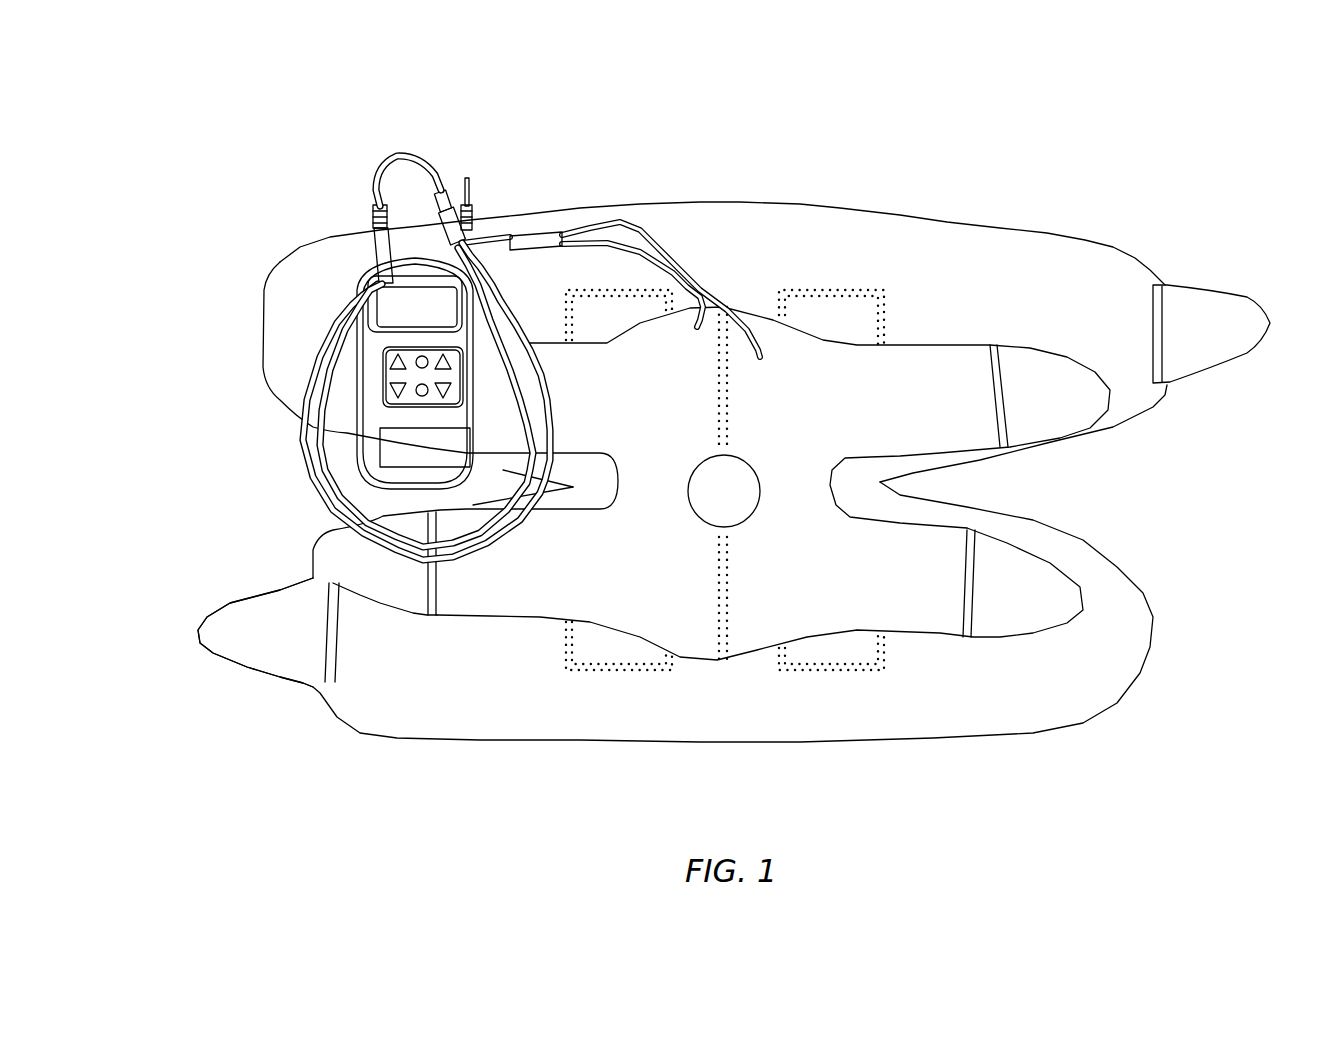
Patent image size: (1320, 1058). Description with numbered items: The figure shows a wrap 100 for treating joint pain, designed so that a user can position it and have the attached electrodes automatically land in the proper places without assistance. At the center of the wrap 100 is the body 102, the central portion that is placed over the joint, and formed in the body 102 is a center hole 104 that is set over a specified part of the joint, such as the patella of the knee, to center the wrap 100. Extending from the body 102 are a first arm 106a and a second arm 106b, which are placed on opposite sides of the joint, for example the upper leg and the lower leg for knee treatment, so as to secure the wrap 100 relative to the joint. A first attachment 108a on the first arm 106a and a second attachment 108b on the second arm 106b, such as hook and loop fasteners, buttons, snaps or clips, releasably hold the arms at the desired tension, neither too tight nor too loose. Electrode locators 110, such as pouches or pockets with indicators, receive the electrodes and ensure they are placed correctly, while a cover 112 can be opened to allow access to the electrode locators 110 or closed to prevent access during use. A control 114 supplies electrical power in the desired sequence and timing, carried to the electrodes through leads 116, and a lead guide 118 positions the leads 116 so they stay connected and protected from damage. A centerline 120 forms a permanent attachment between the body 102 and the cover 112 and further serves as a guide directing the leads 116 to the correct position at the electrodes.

The wrap 100 is at (204, 132).
The body 102 is at (727, 428).
The center hole 104 is at (747, 509).
The first arm 106a is at (1043, 252).
The second arm 106b is at (1078, 668).
The first attachment 108a is at (1210, 320).
The second attachment 108b is at (232, 633).
The electrode locators 110 is at (857, 312).
The cover 112 is at (932, 372).
The control 114 is at (423, 277).
The leads 116 is at (614, 231).
The lead guide 118 is at (758, 325).
The centerline 120 is at (717, 647).